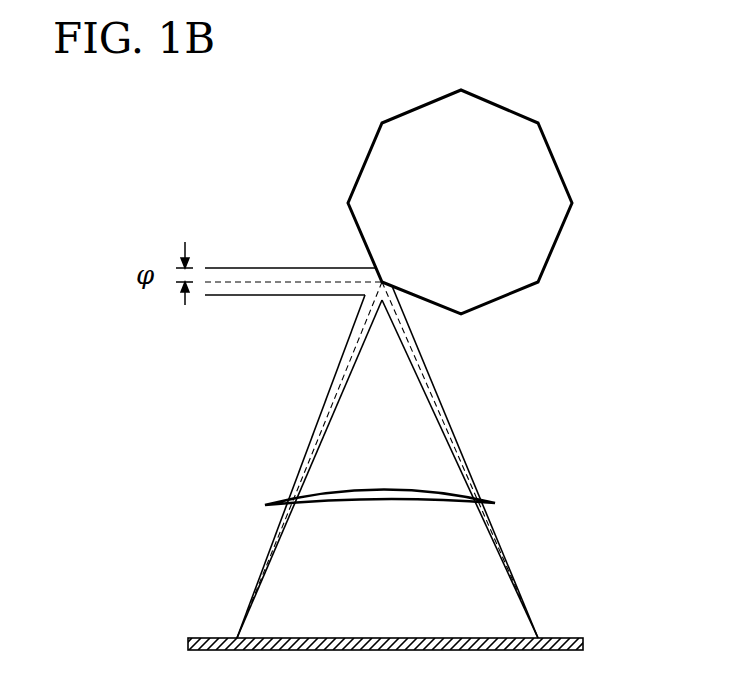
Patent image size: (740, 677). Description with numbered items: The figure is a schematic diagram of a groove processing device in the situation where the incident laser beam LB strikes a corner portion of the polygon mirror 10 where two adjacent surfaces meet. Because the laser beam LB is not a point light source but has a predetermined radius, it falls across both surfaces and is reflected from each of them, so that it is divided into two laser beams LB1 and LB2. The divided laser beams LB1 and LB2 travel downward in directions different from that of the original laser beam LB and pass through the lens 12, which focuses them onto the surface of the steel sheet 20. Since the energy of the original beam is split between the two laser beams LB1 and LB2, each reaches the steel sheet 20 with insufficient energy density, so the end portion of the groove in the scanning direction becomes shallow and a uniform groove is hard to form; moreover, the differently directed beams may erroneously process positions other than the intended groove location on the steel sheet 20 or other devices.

The polygon mirror 10 is at (552, 150).
The lens 12 is at (495, 503).
The steel sheet 20 is at (583, 643).
The laser beam LB is at (283, 268).
The laser beam LB1 is at (298, 453).
The laser beam LB2 is at (462, 437).